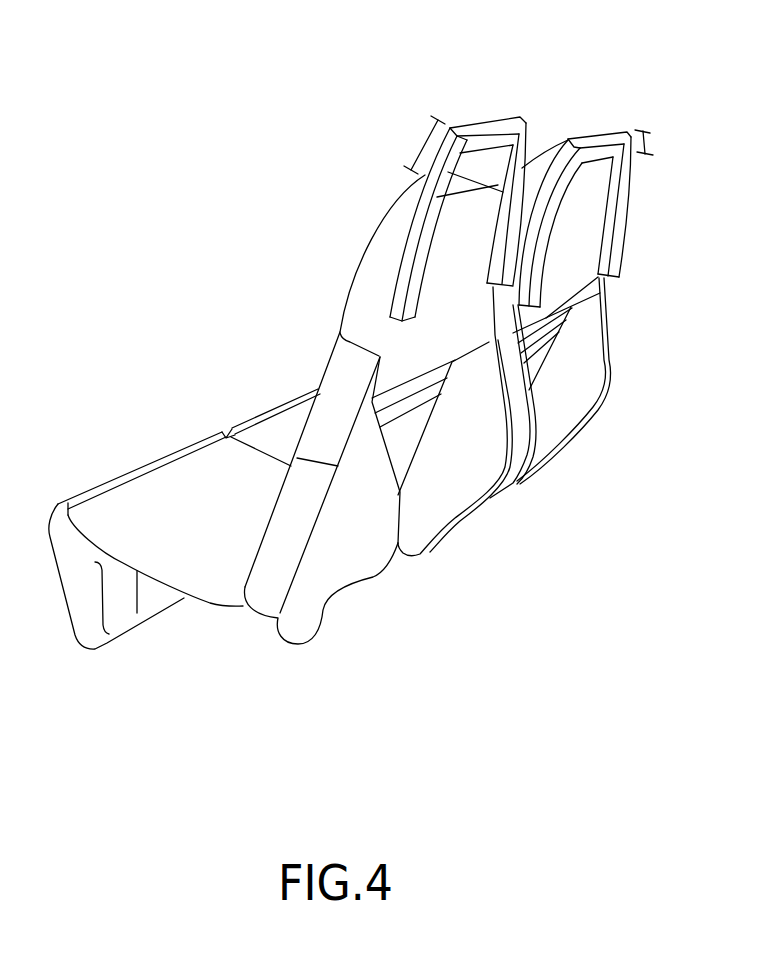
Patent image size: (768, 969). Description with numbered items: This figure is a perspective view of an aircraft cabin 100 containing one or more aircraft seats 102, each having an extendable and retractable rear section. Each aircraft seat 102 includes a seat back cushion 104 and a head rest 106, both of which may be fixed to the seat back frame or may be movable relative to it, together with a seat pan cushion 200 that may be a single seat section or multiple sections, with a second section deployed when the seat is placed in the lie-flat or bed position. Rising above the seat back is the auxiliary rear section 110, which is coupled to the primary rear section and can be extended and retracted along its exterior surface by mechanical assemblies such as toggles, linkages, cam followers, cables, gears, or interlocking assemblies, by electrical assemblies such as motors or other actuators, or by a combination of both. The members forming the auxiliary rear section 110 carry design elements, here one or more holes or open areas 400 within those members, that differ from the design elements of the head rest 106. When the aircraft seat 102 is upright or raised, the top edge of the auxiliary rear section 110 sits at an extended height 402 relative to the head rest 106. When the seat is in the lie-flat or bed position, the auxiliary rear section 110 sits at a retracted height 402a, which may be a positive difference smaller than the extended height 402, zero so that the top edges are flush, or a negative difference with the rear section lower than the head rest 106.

The aircraft cabin 100 is at (135, 95).
The aircraft seat 102 is at (392, 58).
The seat back cushion 104 is at (337, 583).
The head rest 106 is at (368, 270).
The auxiliary rear section 110 is at (496, 132).
The seat pan cushion 200 is at (150, 480).
The holes or open areas 400 is at (477, 160).
The extended height 402 is at (420, 148).
The retracted height 402a is at (652, 140).